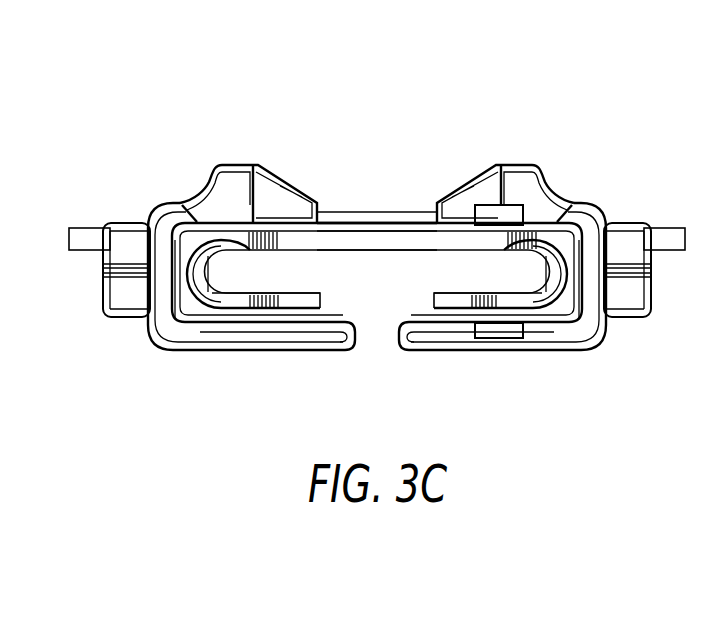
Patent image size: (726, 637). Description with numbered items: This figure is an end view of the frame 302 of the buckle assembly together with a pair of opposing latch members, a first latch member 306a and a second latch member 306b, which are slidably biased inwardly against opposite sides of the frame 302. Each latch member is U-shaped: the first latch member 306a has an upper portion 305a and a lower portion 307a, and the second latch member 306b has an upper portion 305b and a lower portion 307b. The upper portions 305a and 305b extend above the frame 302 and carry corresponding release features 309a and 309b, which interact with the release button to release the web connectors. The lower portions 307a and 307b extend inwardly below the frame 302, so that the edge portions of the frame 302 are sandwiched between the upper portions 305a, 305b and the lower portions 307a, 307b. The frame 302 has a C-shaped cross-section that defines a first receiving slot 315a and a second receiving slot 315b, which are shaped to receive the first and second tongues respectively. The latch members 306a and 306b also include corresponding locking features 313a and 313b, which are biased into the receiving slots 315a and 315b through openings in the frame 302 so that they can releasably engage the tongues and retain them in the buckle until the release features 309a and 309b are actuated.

The frame 302 is at (350, 240).
The upper portion of first latch member 305a is at (507, 178).
The upper portion of second latch member 305b is at (238, 178).
The first latch member 306a is at (520, 195).
The second latch member 306b is at (230, 203).
The lower portion of first latch member 307a is at (423, 338).
The lower portion of second latch member 307b is at (327, 340).
The first release feature 309a is at (458, 188).
The second release feature 309b is at (292, 184).
The first locking feature 313a is at (208, 266).
The second locking feature 313b is at (550, 263).
The first receiving slot 315a is at (237, 282).
The second receiving slot 315b is at (517, 286).